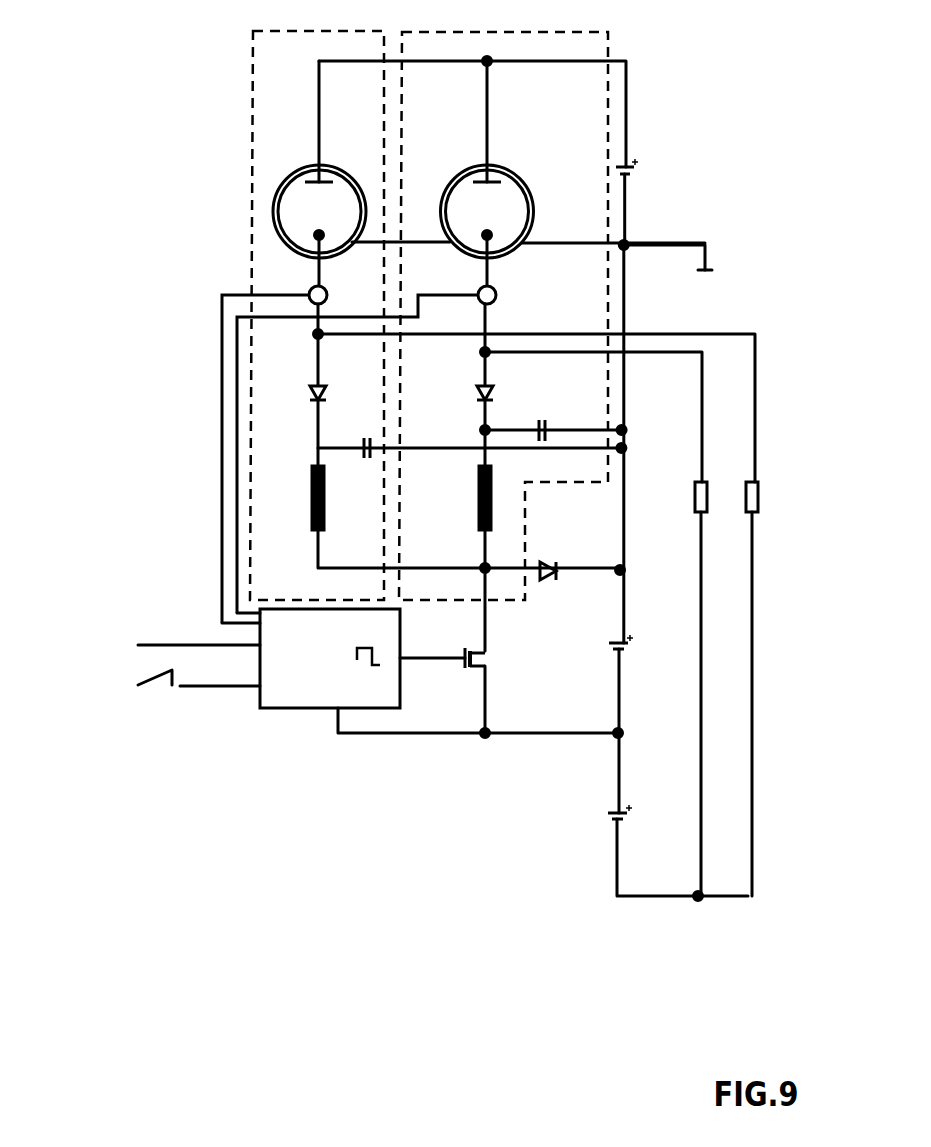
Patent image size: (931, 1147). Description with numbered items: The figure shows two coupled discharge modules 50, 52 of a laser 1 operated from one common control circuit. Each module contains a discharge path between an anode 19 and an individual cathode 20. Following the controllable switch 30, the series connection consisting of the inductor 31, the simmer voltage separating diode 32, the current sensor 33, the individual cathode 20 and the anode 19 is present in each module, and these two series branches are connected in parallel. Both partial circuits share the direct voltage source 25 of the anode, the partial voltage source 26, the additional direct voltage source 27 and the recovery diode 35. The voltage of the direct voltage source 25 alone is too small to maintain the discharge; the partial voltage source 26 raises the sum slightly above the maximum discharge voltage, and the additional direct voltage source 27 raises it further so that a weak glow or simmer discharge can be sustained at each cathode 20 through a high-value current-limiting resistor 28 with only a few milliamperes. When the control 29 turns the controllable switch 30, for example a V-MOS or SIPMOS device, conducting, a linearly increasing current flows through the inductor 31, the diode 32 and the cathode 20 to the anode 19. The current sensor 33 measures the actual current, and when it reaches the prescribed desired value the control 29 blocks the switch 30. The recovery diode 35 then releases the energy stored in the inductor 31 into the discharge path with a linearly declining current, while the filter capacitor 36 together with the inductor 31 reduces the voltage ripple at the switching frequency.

The laser 1 is at (285, 177).
The anode 19 is at (328, 175).
The cathode 20 is at (325, 238).
The direct voltage source of the anode 25 is at (642, 173).
The partial voltage source 26 is at (635, 648).
The additional direct voltage source 27 is at (635, 817).
The current-limiting resistor 28 is at (703, 487).
The control 29 is at (303, 695).
The controllable switch 30 is at (367, 428).
The inductor 31 is at (310, 505).
The simmer voltage separating diode 32 is at (305, 395).
The current sensor 33 is at (310, 287).
The recovery diode 35 is at (548, 558).
The filter capacitor 36 is at (552, 420).
The first discharge module 50 is at (248, 547).
The second discharge module 52 is at (610, 118).